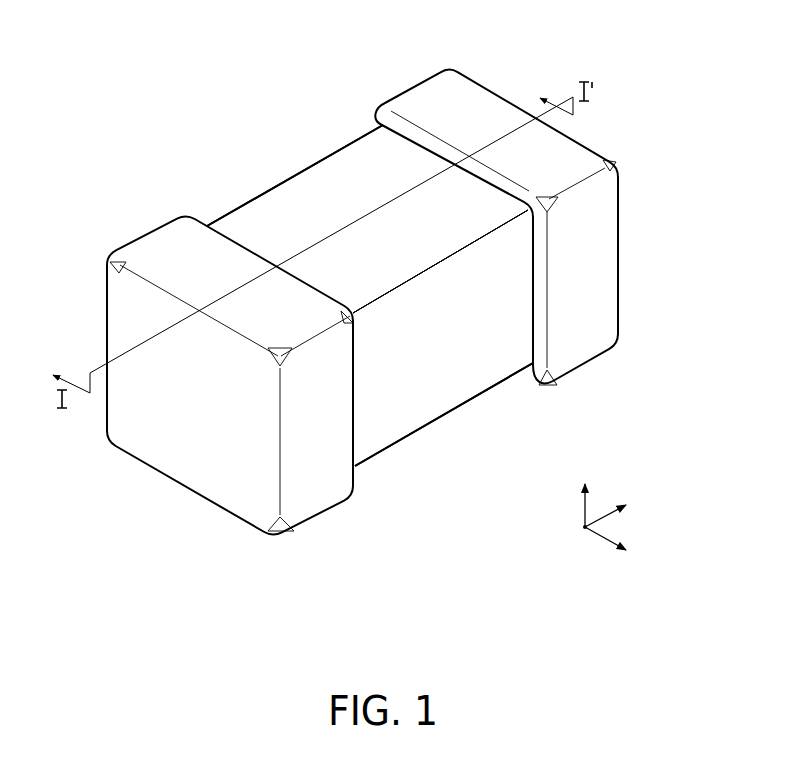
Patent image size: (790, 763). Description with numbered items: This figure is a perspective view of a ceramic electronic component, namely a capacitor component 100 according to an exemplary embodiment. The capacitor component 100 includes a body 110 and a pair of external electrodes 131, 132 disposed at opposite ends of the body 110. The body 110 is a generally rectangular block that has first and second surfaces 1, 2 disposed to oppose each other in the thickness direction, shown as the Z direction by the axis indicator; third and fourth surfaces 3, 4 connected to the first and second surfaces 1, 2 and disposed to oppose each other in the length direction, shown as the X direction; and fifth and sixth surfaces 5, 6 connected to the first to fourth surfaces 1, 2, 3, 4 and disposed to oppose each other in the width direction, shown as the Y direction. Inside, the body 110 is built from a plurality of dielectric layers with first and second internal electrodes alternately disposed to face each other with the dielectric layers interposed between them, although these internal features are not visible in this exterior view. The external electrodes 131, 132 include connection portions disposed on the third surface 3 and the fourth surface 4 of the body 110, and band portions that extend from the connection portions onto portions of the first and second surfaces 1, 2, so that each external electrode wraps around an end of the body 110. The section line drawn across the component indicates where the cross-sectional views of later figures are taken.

The capacitor component 100 is at (167, 78).
The body 110 is at (262, 220).
The first surface 1 is at (403, 390).
The second surface 2 is at (379, 182).
The third surface 3 is at (201, 436).
The fourth surface 4 is at (570, 242).
The fifth surface 5 is at (460, 358).
The sixth surface 6 is at (320, 205).
The external electrode 131 is at (163, 253).
The external electrode 132 is at (420, 103).